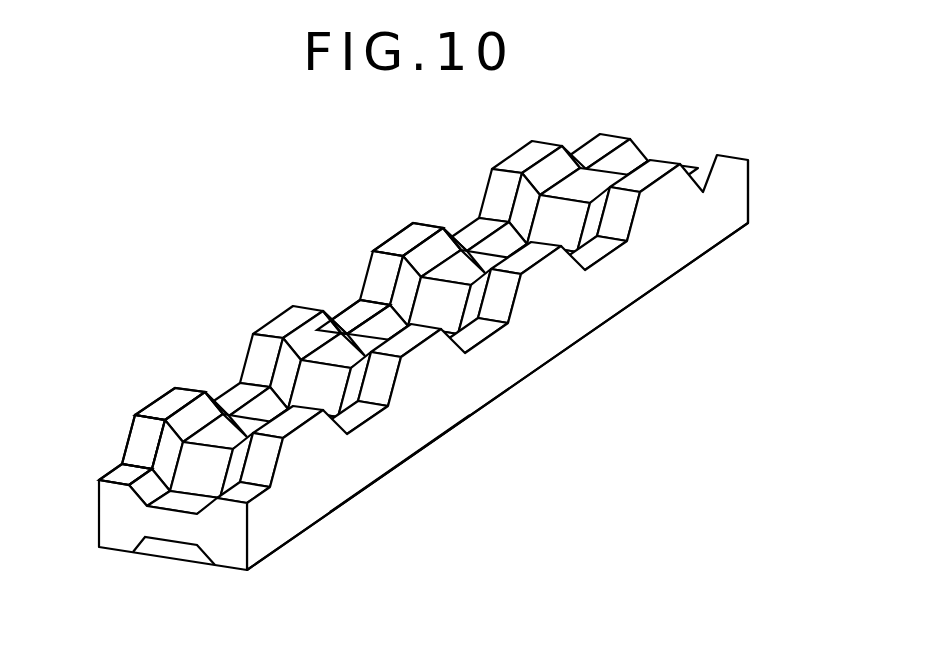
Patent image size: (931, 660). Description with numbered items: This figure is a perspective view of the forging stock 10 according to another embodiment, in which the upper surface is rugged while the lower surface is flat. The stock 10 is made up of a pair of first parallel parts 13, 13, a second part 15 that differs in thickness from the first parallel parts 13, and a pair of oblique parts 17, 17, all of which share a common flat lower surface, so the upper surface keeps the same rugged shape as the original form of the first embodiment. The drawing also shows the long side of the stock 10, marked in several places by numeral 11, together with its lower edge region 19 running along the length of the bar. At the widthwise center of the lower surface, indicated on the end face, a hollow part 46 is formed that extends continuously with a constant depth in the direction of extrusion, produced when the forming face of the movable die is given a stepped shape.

The stock 10 is at (323, 148).
The side surface 11 is at (336, 538).
The first parallel parts 13 is at (112, 466).
The second part 15 is at (152, 404).
The oblique parts 17 is at (123, 464).
The lower edge 19 is at (400, 466).
The hollow part 46 is at (170, 546).